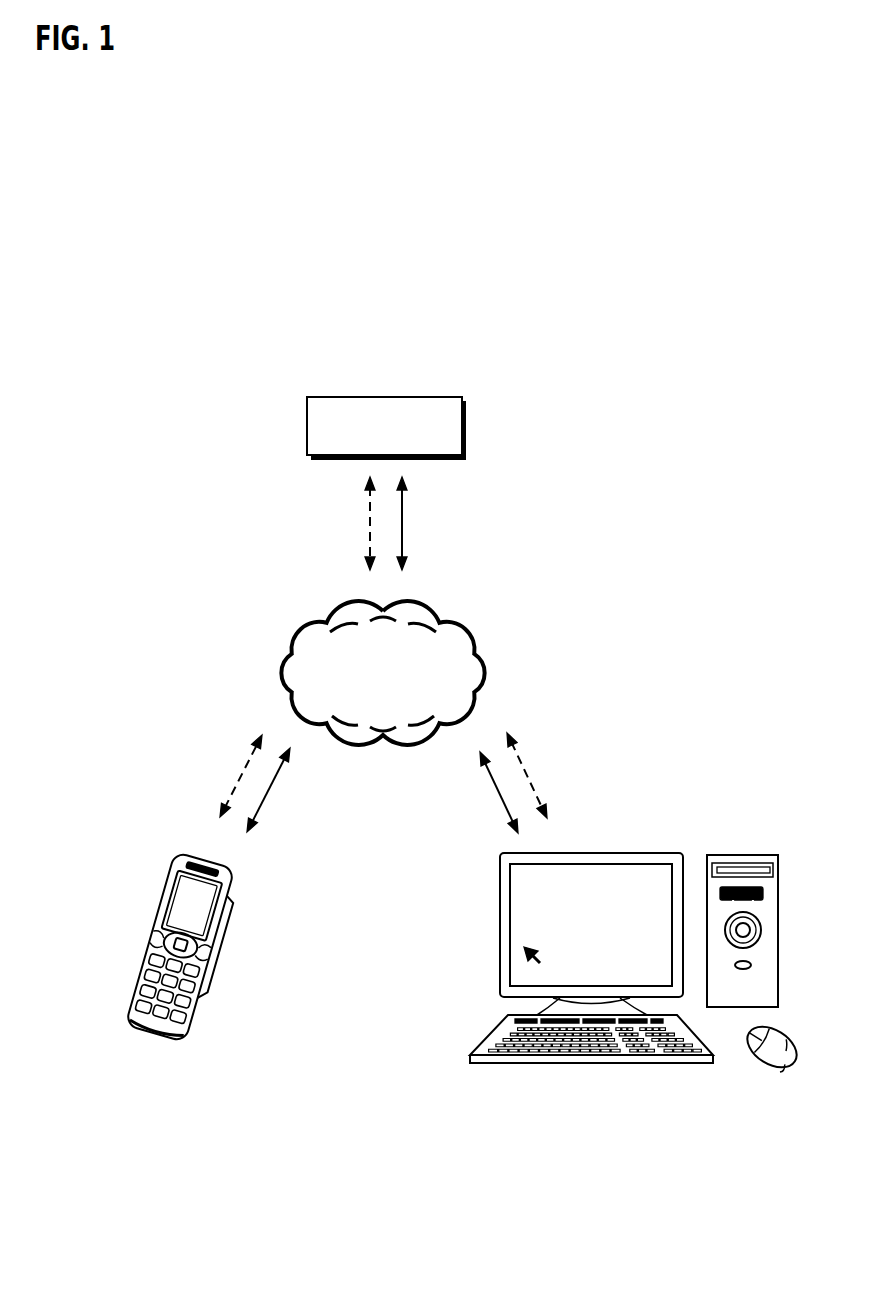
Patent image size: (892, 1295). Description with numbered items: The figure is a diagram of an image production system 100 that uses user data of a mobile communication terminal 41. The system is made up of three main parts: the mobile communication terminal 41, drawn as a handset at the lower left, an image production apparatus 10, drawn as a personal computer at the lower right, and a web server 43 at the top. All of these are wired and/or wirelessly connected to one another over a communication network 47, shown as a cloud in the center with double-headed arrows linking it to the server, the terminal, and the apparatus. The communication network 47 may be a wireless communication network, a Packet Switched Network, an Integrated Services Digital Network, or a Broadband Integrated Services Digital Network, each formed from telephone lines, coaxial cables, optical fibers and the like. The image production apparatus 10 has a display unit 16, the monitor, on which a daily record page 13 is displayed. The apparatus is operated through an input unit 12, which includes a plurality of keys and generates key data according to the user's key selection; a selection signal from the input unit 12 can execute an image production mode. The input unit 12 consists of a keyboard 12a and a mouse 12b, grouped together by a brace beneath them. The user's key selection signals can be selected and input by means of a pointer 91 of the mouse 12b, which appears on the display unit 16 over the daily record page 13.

The image production system 100 is at (693, 428).
The image production apparatus 10 is at (765, 768).
The input unit 12 is at (663, 1165).
The keyboard 12a is at (674, 1063).
The mouse 12b is at (781, 1066).
The daily record page 13 is at (608, 865).
The display unit 16 is at (539, 886).
The mobile communication terminal 41 is at (179, 829).
The web server 43 is at (420, 397).
The communication network 47 is at (440, 619).
The pointer 91 is at (523, 950).